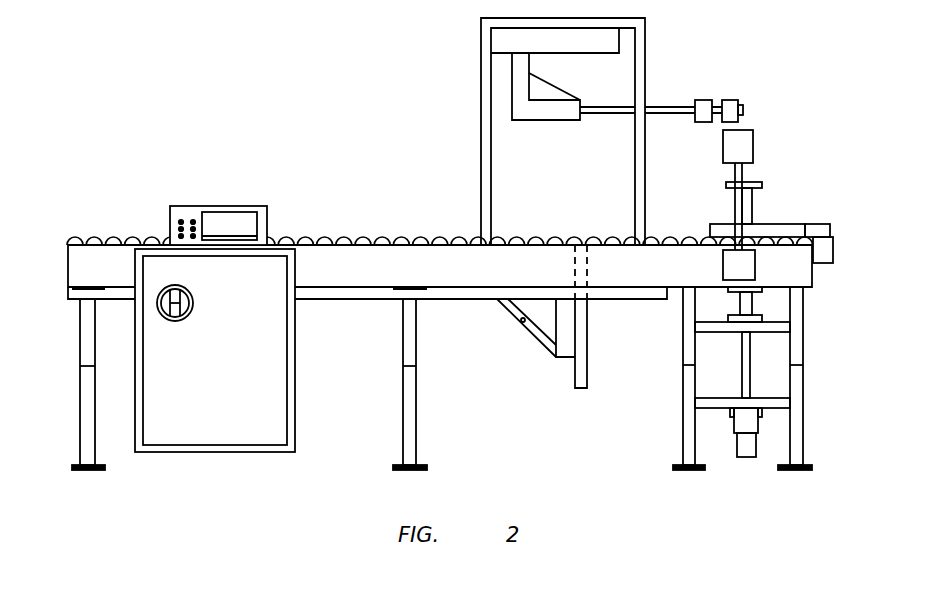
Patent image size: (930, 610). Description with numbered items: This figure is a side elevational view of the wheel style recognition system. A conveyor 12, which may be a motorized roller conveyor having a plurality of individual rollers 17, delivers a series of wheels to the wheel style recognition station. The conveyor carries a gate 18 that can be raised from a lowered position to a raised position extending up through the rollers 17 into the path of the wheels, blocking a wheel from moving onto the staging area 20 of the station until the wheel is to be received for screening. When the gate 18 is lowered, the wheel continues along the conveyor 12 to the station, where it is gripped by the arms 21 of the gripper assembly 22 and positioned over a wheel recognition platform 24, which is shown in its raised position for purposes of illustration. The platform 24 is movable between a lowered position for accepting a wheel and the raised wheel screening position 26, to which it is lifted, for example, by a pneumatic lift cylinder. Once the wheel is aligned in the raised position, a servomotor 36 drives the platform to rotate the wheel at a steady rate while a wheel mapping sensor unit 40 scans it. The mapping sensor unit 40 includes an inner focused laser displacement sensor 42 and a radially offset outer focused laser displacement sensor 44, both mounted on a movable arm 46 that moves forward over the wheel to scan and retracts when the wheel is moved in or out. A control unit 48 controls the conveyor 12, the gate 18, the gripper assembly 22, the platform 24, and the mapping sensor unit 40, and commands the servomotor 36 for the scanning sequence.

The conveyor 12 is at (76, 236).
The rollers 17 is at (440, 242).
The gate 18 is at (589, 370).
The staging area 20 is at (710, 217).
The arms 21 is at (818, 222).
The gripper assembly 22 is at (839, 250).
The wheel recognition platform 24 is at (755, 198).
The raised wheel screening position 26 is at (765, 172).
The servomotor 36 is at (753, 302).
The wheel mapping sensor unit 40 is at (765, 95).
The inner focused laser displacement sensor 42 is at (730, 100).
The outer focused laser displacement sensor 44 is at (700, 100).
The movable arm 46 is at (600, 117).
The control unit 48 is at (289, 205).